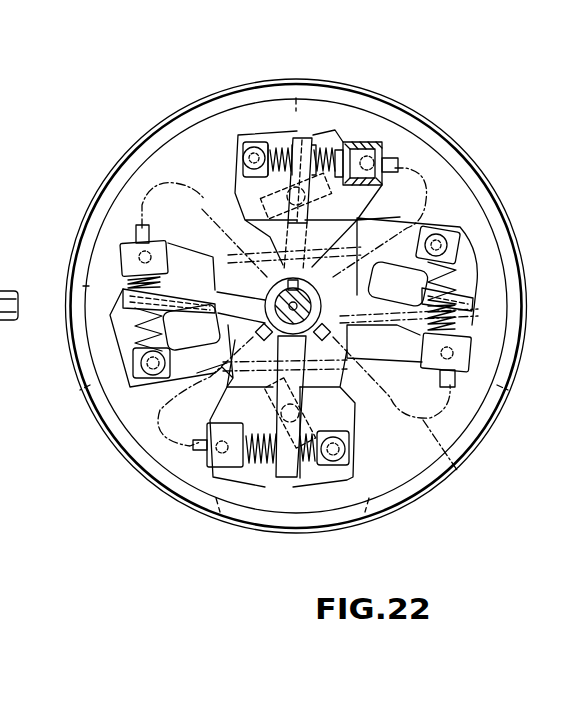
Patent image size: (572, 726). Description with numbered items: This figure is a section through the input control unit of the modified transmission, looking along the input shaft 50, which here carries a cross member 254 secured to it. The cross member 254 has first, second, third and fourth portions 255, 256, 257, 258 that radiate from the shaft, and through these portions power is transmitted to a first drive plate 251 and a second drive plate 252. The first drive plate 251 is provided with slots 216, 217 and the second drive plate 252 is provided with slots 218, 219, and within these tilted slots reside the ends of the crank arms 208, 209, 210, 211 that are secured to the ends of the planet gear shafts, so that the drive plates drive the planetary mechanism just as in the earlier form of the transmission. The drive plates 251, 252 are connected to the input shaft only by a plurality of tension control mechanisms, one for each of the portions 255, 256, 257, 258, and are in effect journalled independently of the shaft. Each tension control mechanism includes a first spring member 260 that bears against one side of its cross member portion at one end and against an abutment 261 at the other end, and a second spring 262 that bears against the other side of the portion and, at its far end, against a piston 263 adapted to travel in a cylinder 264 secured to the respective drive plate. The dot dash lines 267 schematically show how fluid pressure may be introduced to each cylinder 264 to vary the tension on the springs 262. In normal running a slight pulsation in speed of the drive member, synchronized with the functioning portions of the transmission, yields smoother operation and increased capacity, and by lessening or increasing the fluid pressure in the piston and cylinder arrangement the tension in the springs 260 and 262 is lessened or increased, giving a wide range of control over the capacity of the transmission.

The bracket 50 is at (11, 323).
The crank arm 208 is at (112, 322).
The crank arm 209 is at (470, 316).
The crank arm 210 is at (235, 190).
The crank arm 211 is at (352, 425).
The slot 216 is at (122, 286).
The slot 217 is at (472, 305).
The slot 218 is at (312, 136).
The slot 219 is at (282, 478).
The first drive plate 251 is at (132, 380).
The second drive plate 252 is at (238, 134).
The cross member 254 is at (437, 383).
The first portion of cross member 255 is at (213, 257).
The second portion of cross member 256 is at (385, 308).
The third portion of cross member 257 is at (322, 135).
The fourth portion of cross member 258 is at (300, 495).
The first spring member 260 is at (302, 135).
The abutment 261 is at (240, 138).
The second spring 262 is at (338, 148).
The piston 263 is at (357, 143).
The cylinder 264 is at (382, 142).
The dot dash lines 267 is at (457, 470).